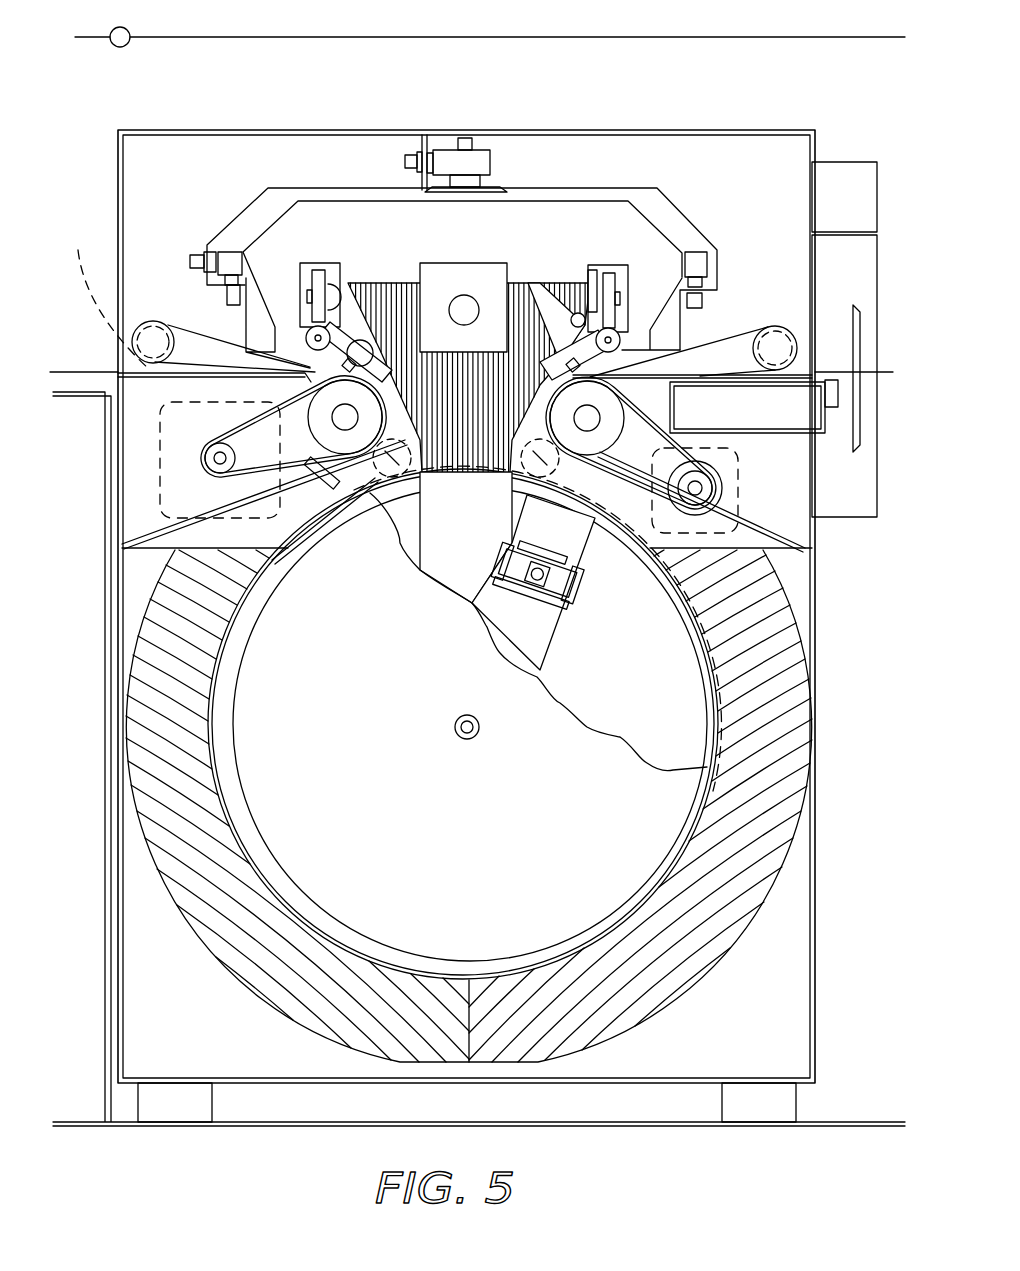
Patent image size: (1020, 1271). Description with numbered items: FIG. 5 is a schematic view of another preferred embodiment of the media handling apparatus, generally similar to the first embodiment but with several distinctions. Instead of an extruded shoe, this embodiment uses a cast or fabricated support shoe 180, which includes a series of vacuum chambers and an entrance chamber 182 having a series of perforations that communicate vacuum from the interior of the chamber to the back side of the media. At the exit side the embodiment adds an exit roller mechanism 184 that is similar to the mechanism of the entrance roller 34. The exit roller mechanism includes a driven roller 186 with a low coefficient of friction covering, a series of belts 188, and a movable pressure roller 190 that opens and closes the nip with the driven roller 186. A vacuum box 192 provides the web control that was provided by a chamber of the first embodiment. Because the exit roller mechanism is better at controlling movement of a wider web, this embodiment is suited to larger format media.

The entrance roller 34 is at (347, 443).
The support shoe 180 is at (667, 962).
The entrance chamber 182 is at (172, 542).
The exit roller mechanism 184 is at (605, 450).
The driven roller 186 is at (620, 452).
The belts 188 is at (733, 333).
The movable pressure roller 190 is at (538, 476).
The vacuum box 192 is at (762, 421).